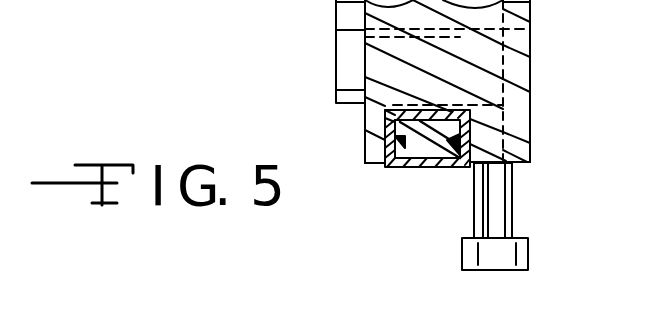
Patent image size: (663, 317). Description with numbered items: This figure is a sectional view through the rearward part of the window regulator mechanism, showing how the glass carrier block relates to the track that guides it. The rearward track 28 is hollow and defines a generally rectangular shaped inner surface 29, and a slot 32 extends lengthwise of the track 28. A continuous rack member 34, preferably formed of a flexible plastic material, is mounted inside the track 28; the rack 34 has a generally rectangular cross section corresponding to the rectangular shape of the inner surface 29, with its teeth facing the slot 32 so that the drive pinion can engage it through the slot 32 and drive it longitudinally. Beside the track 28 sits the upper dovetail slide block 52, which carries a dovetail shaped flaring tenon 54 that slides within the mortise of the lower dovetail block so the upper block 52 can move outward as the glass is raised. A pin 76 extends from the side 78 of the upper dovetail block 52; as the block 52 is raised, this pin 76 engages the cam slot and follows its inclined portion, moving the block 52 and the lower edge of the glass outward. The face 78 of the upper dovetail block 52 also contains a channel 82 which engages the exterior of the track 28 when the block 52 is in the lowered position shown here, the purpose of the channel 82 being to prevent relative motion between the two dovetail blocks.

The rearward track 28 is at (403, 170).
The inner surface 29 is at (395, 126).
The slot 32 is at (436, 112).
The rack member 34 is at (384, 166).
The upper dovetail slide block 52 is at (547, 93).
The flaring tenon 54 is at (365, 57).
The pin 76 is at (513, 200).
The side 78 is at (527, 173).
The channel 82 is at (447, 168).